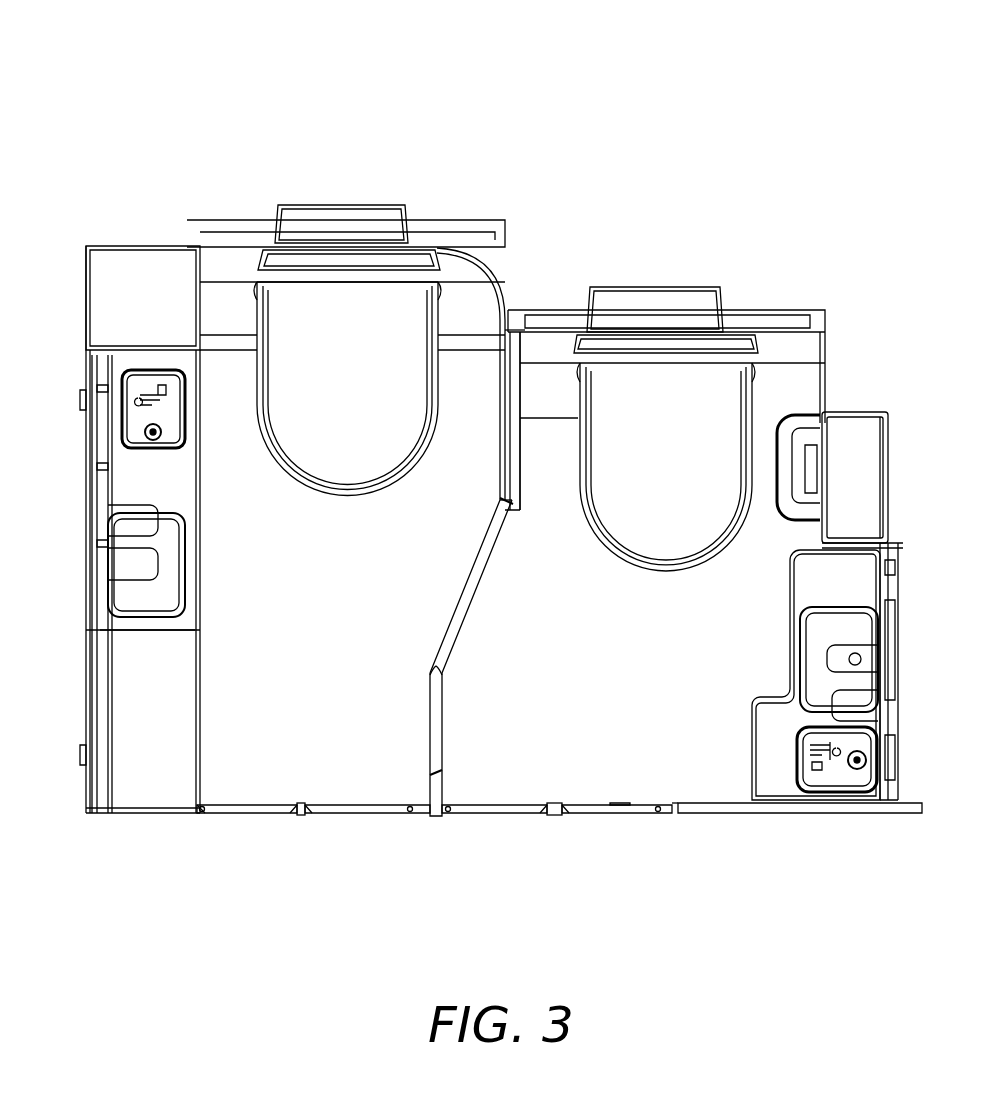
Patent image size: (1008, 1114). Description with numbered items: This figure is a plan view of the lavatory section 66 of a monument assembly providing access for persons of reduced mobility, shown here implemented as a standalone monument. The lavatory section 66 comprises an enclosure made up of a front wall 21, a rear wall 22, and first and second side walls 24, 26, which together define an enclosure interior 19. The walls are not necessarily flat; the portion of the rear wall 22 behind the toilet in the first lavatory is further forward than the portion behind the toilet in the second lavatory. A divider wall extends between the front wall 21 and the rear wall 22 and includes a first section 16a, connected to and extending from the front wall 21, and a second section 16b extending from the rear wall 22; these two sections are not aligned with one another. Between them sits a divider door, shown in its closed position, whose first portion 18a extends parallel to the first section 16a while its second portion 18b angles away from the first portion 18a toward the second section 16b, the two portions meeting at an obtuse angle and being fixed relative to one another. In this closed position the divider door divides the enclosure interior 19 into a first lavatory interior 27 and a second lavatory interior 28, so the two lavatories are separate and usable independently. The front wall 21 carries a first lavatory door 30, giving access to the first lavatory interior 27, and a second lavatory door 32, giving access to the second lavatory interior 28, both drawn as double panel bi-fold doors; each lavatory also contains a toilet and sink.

The lavatory section 66 is at (533, 130).
The rear wall 22 is at (130, 245).
The first side wall 24 is at (825, 371).
The second side wall 26 is at (82, 447).
The second lavatory interior 28 is at (332, 620).
The first lavatory interior 27 is at (638, 700).
The enclosure interior 19 is at (515, 620).
The first portion of divider door 18a is at (442, 727).
The second portion of divider door 18b is at (470, 562).
The first section of divider wall 16a is at (430, 790).
The second section of divider wall 16b is at (500, 446).
The first lavatory door 30 is at (614, 818).
The second lavatory door 32 is at (250, 817).
The front wall 21 is at (717, 814).